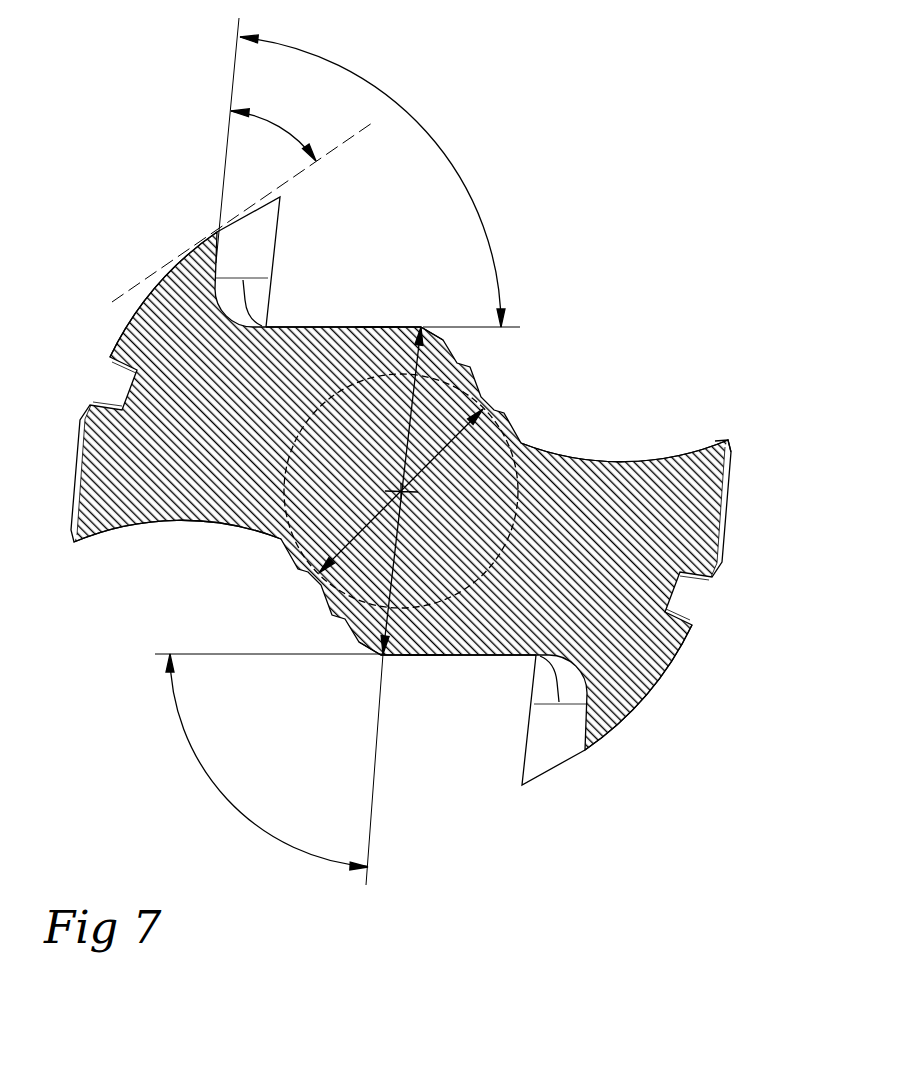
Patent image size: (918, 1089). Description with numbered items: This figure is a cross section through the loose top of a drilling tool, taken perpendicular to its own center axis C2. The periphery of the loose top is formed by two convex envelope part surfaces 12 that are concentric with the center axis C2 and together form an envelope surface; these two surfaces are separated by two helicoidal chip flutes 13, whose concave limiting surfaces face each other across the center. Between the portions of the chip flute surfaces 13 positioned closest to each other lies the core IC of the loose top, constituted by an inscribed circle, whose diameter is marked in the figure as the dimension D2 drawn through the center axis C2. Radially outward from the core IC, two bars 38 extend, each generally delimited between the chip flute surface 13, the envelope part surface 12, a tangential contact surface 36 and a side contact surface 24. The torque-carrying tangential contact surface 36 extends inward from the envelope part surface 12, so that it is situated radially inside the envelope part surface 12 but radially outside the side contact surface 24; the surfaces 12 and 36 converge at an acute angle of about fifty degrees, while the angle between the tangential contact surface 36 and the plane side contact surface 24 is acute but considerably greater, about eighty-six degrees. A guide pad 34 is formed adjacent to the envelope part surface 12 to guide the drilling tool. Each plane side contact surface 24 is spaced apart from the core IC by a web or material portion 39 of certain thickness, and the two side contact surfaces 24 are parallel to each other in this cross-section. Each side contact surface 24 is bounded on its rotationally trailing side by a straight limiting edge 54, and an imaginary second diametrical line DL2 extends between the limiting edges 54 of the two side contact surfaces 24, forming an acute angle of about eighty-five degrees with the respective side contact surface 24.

The envelope part surface 12 is at (132, 322).
The chip flute 13 is at (188, 524).
The side contact surface 24 is at (317, 326).
The guide pad 34 is at (731, 446).
The tangential contact surface 36 is at (217, 257).
The bar 38 is at (122, 510).
The web or material portion 39 is at (372, 352).
The trailing side borderline (limiting edge) 54 is at (421, 326).
The core (inscribed circle) IC is at (518, 485).
The second diametrical line DL2 is at (407, 447).
The inscribed circle diameter D2 is at (363, 531).
The center axis of the loose top C2 is at (402, 491).